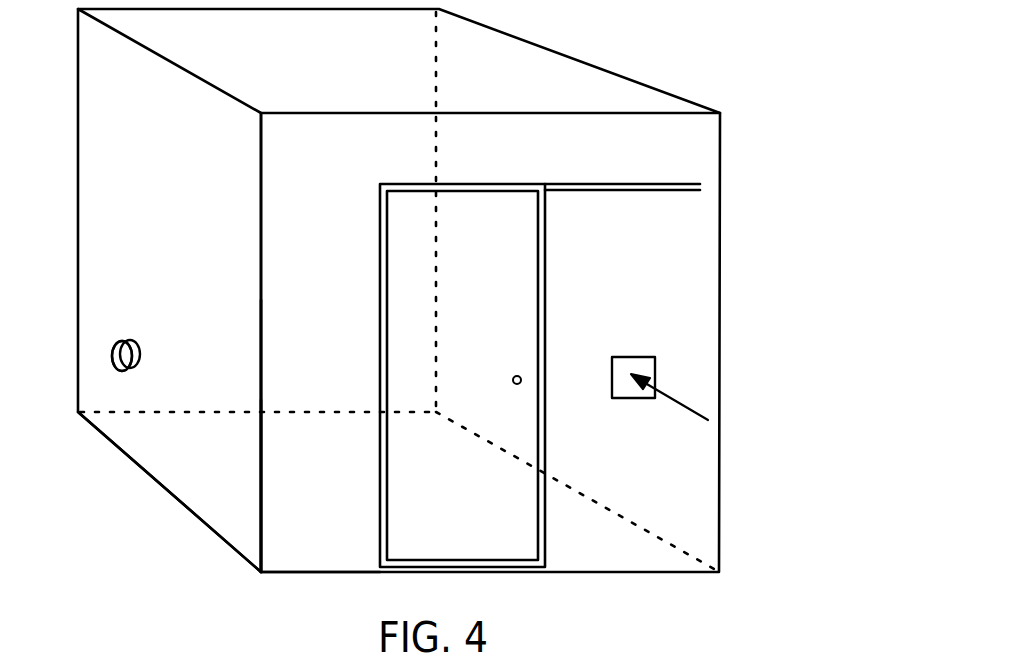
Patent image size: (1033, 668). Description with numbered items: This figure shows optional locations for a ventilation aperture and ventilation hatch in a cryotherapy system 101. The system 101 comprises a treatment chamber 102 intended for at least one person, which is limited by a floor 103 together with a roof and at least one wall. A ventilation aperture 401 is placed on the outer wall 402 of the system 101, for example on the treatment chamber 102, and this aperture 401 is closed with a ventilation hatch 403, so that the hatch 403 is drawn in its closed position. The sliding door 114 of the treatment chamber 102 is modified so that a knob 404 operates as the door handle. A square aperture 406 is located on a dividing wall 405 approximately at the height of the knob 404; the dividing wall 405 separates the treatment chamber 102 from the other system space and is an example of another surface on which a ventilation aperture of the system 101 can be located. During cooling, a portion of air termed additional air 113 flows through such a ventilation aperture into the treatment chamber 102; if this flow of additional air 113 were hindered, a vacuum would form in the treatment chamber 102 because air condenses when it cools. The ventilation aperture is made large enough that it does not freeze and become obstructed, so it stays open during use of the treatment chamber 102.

The system 101 is at (688, 62).
The treatment chamber 102 is at (314, 362).
The floor 103 is at (233, 458).
The additional air 113 is at (708, 420).
The sliding door 114 is at (478, 274).
The ventilation aperture 401 is at (143, 354).
The outer wall 402 is at (174, 216).
The ventilation hatch 403 is at (120, 346).
The knob 404 is at (515, 377).
The dividing wall 405 is at (314, 236).
The square aperture 406 is at (632, 366).